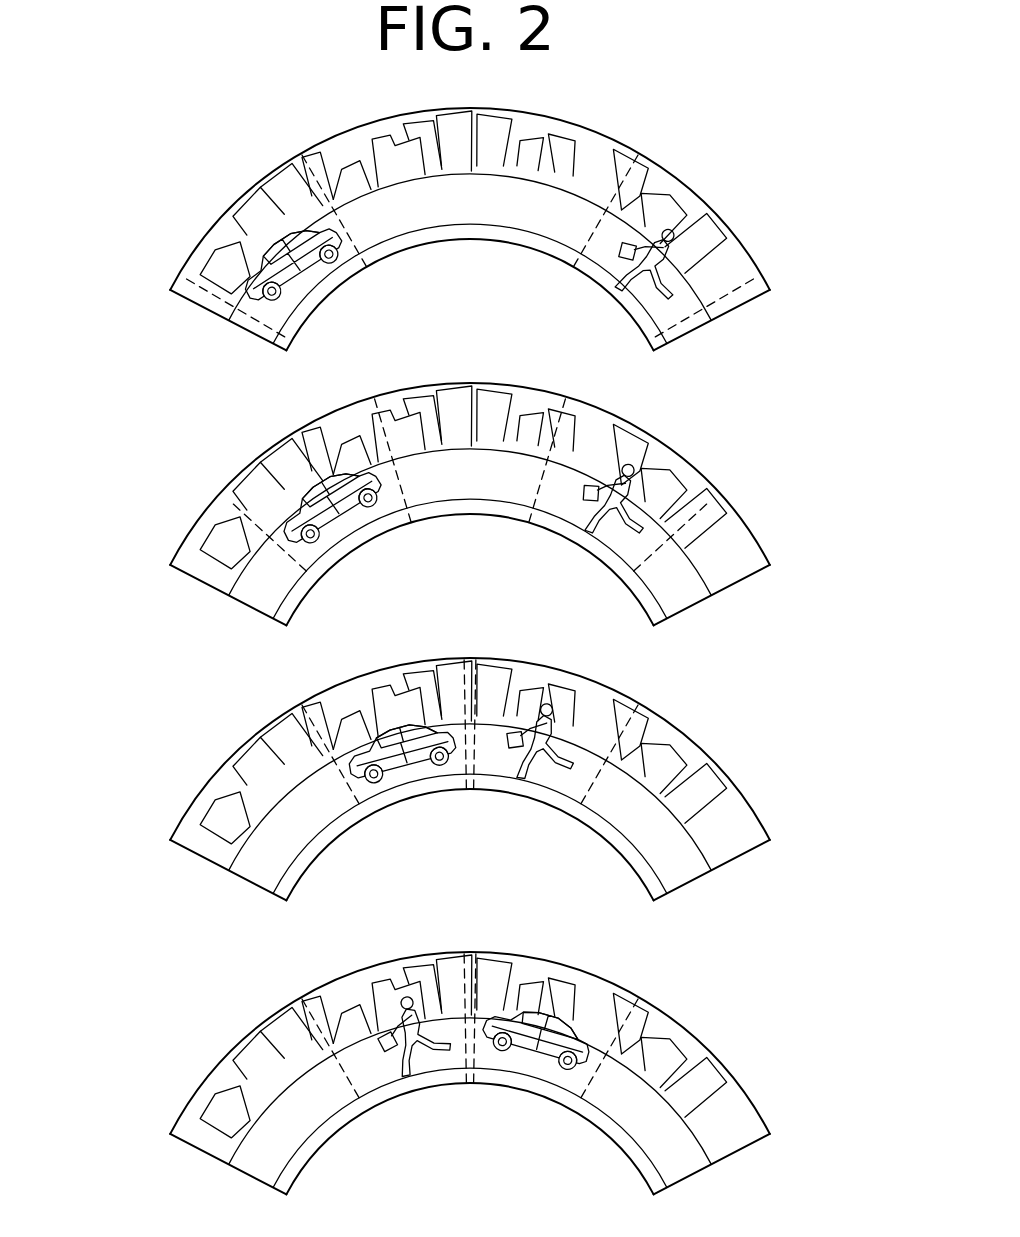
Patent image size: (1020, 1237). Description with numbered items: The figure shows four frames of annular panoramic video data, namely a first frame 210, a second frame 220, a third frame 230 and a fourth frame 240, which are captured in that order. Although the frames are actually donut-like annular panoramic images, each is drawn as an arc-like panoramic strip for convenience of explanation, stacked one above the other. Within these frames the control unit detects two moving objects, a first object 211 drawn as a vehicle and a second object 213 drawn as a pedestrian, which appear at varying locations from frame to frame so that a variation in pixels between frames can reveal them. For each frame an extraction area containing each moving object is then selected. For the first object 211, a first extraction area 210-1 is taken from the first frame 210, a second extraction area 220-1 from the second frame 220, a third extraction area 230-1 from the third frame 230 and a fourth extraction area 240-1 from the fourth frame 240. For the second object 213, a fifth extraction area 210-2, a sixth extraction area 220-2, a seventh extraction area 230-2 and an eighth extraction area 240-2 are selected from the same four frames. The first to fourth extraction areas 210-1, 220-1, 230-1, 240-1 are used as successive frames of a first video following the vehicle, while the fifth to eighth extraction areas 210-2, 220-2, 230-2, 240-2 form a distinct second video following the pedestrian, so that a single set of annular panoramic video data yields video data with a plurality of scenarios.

The first frame 210 is at (424, 229).
The first extraction area 210-1 is at (232, 212).
The fifth extraction area 210-2 is at (667, 192).
The first object 211 is at (242, 250).
The second object 213 is at (678, 217).
The second frame 220 is at (424, 504).
The second extraction area 220-1 is at (267, 488).
The sixth extraction area 220-2 is at (707, 484).
The third frame 230 is at (424, 779).
The third extraction area 230-1 is at (298, 726).
The seventh extraction area 230-2 is at (673, 734).
The fourth frame 240 is at (424, 1073).
The fourth extraction area 240-1 is at (663, 1018).
The eighth extraction area 240-2 is at (285, 1020).